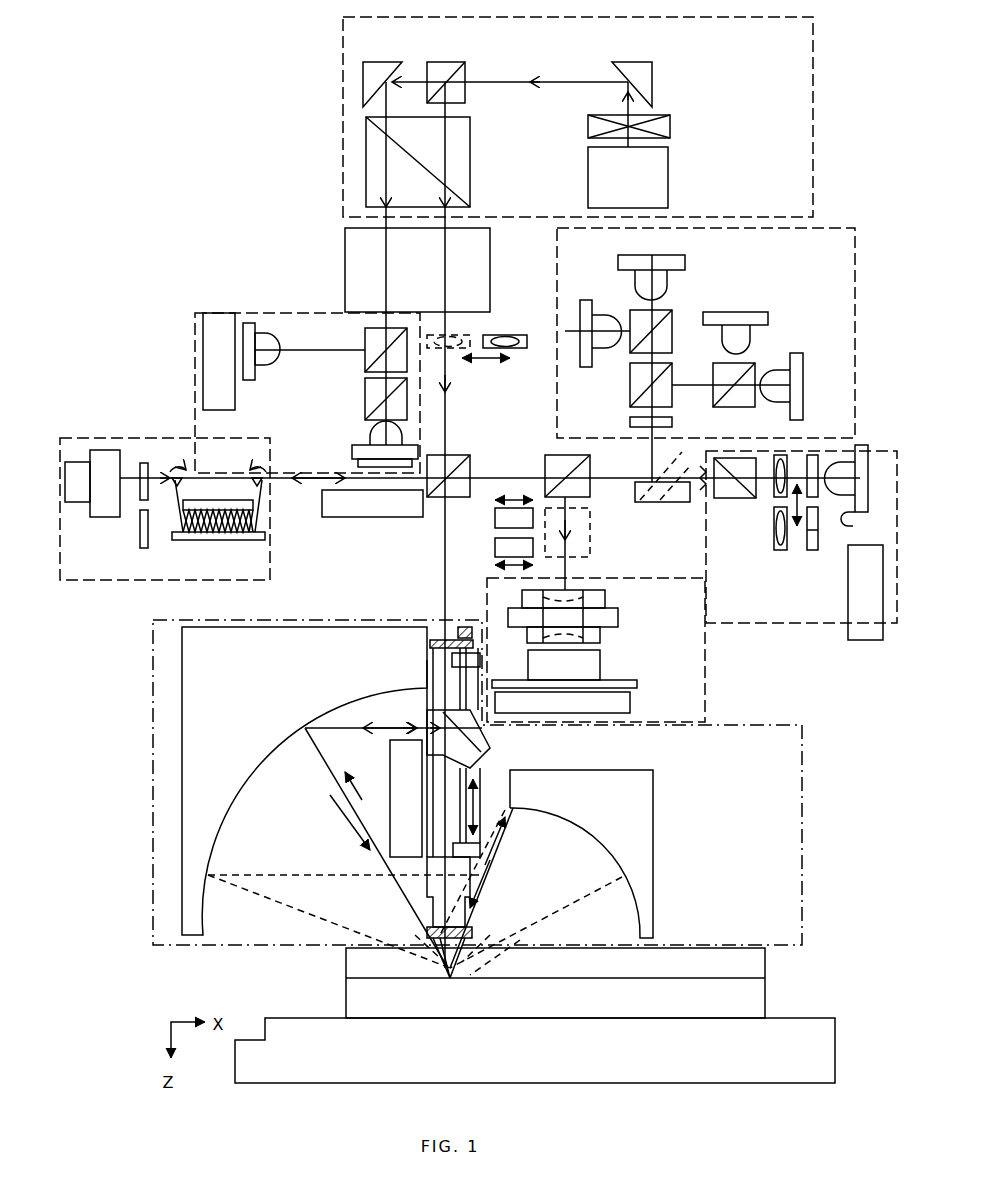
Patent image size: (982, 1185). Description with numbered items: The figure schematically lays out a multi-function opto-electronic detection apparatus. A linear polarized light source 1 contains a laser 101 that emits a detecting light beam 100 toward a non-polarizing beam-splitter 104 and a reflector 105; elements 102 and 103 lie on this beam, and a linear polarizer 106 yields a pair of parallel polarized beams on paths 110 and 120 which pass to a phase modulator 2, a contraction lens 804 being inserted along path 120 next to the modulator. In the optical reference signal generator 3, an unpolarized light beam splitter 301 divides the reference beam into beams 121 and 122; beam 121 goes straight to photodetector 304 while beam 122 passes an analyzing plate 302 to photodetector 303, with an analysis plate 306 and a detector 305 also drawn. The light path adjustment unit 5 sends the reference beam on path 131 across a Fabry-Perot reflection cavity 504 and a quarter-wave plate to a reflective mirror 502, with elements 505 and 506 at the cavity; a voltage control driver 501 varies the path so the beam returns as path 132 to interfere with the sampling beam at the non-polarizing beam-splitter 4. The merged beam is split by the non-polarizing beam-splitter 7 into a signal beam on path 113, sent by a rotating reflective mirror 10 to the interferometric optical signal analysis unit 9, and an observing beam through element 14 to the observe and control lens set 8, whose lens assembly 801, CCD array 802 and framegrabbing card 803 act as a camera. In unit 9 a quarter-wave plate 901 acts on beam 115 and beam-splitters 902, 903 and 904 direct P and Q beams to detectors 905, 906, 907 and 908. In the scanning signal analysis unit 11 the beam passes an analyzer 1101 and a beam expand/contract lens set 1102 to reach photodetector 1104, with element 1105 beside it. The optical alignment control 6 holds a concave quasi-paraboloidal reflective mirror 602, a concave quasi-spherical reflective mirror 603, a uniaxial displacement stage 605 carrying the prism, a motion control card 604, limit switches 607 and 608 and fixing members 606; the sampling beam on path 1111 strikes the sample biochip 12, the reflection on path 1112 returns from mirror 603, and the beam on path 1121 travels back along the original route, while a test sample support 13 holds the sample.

The linear polarized light source 1 is at (343, 175).
The detecting light beam 100 is at (510, 68).
The laser 101 is at (640, 182).
The beam expander 102 is at (670, 126).
The mirror 103 is at (638, 75).
The non-polarizing beam-splitter 104 is at (448, 66).
The reflector 105 is at (384, 66).
The linear polarizer 106 is at (438, 158).
The sampling beam path 110 is at (814, 572).
The reference beam path 120 is at (386, 228).
The phase modulator 2 is at (350, 270).
The optical reference signal generator 3 is at (205, 385).
The analysis plate 306 is at (219, 349).
The photodetector 304 is at (250, 380).
The unpolarized light beam splitter 301 is at (372, 352).
The reference beam 121 is at (310, 335).
The analyzing plate 302 is at (370, 410).
The reference beam 122 is at (368, 386).
The photodetector 303 is at (365, 452).
The light path adjustment unit 5 is at (100, 440).
The voltage control driver 501 is at (78, 502).
The reflective mirror 502 is at (105, 517).
The reference beam path 131 is at (142, 492).
The Fabry-Perot reflection cavity 504 is at (218, 540).
The mirror 505 is at (182, 461).
The mirror 506 is at (248, 461).
The reflected reference beam path 132 is at (292, 482).
The contraction lens 804 is at (477, 336).
The non-polarizing beam-splitter 4 is at (470, 460).
The detector 305 is at (372, 517).
The signal beam path 113 is at (520, 478).
The beam 115 is at (490, 540).
The lens 14 is at (577, 543).
The non-polarizing beam-splitter 7 is at (608, 480).
The interferometric optical signal analysis unit 9 is at (843, 228).
The detector 907 is at (675, 254).
The detector 908 is at (593, 310).
The beam splitter 904 is at (668, 328).
The detector 906 is at (765, 318).
The beam splitter 902 is at (630, 388).
The beam splitter 903 is at (734, 402).
The detector 905 is at (798, 370).
The quarter-wave plate 901 is at (630, 421).
The rotating reflective mirror 10 is at (667, 502).
The scanning signal analysis unit 11 is at (762, 608).
The analyzer 1101 is at (733, 495).
The beam expand/contract lens set 1102 is at (780, 550).
The photodetector 1104 is at (859, 492).
The camera 1105 is at (866, 640).
The observe and control lens set 8 is at (632, 580).
The lens assembly 801 is at (590, 612).
The CCD array 802 is at (600, 662).
The framegrabbing card 803 is at (622, 702).
The optical alignment control 6 is at (153, 735).
The fixing member 606 is at (465, 627).
The limit switch 607 is at (440, 640).
The concave quasi-paraboloidal reflective mirror 602 is at (304, 781).
The motion control card 604 is at (392, 852).
The uniaxial displacement stage 605 is at (428, 895).
The sampling beam path 1111 is at (345, 800).
The beam path 1121 is at (494, 807).
The reflected beam path 1112 is at (510, 862).
The limit switch 608 is at (508, 830).
The concave quasi-spherical reflective mirror 603 is at (653, 840).
The sample biochip 12 is at (722, 960).
The test sample support 13 is at (313, 1018).